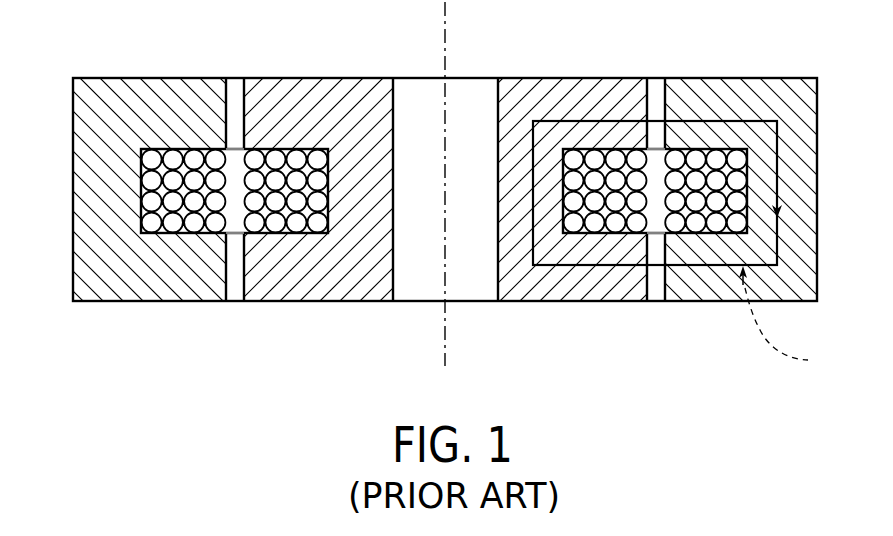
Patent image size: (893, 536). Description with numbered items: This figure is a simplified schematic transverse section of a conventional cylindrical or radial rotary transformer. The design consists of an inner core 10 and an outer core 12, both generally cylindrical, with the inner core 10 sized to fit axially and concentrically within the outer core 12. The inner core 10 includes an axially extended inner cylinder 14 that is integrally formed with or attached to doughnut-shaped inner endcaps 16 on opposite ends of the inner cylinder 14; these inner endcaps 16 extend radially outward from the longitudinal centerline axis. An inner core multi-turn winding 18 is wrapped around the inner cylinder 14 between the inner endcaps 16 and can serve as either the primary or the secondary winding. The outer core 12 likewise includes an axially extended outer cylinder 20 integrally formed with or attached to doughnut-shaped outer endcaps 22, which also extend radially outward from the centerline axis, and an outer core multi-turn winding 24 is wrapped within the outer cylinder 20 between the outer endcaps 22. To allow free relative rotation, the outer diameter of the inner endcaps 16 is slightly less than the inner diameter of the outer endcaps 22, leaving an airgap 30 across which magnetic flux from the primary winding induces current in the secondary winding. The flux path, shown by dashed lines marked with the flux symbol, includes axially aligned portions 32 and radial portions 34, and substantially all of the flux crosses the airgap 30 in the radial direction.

The inner core 10 is at (320, 73).
The outer core 12 is at (134, 73).
The inner cylinder 14 is at (394, 258).
The inner endcaps 16 is at (615, 100).
The inner core multi-turn winding 18 is at (596, 158).
The outer cylinder 20 is at (108, 178).
The outer endcaps 22 is at (165, 105).
The outer core multi-turn winding 24 is at (152, 226).
The airgap 30 is at (233, 285).
The axially aligned portions 32 is at (530, 240).
The radial portions 34 is at (748, 120).